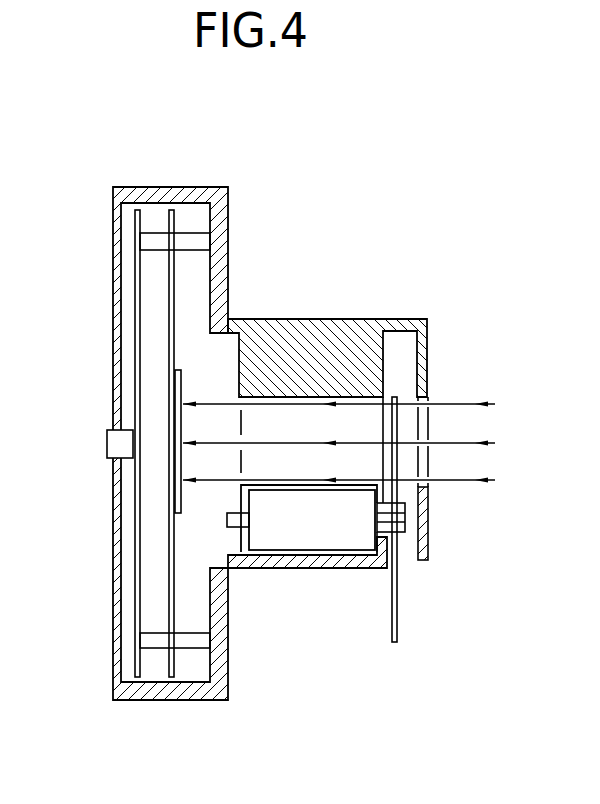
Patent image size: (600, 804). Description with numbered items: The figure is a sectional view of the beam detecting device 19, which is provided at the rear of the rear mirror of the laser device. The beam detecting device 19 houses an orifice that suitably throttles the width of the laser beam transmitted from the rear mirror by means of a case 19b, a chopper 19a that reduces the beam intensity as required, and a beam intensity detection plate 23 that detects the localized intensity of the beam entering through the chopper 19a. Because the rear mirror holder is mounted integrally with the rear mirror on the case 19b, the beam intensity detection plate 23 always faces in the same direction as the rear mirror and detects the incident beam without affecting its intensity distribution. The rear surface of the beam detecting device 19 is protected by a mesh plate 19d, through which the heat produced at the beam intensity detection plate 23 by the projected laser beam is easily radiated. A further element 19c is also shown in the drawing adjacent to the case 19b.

The beam detecting device 19 is at (329, 205).
The chopper 19a is at (397, 598).
The case 19b is at (344, 330).
The plate 19c is at (422, 360).
The mesh plate 19d is at (130, 278).
The beam intensity detection plate 23 is at (182, 388).